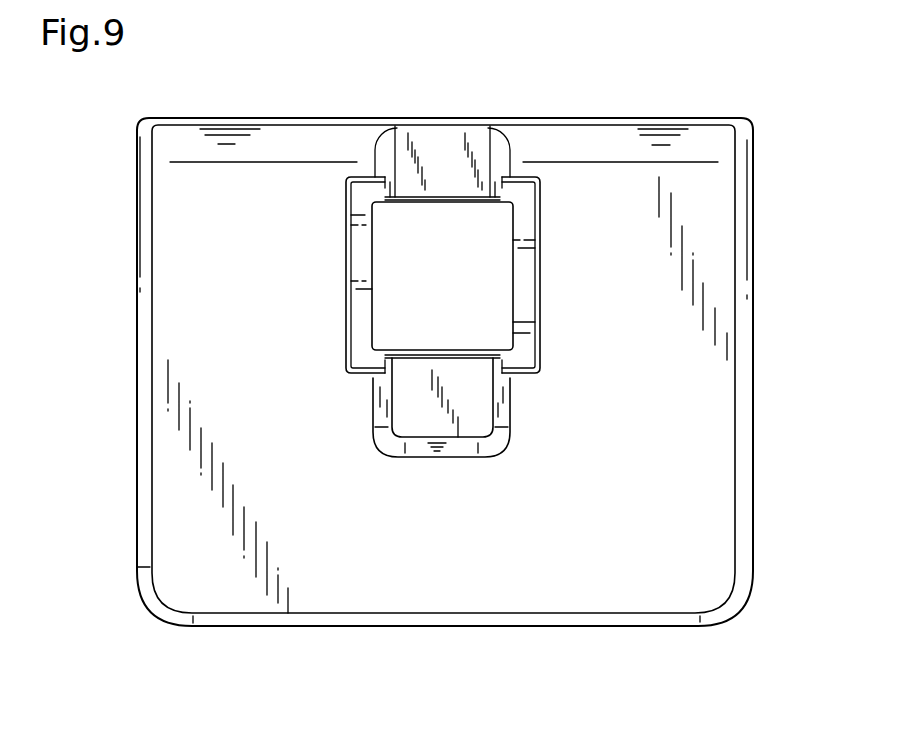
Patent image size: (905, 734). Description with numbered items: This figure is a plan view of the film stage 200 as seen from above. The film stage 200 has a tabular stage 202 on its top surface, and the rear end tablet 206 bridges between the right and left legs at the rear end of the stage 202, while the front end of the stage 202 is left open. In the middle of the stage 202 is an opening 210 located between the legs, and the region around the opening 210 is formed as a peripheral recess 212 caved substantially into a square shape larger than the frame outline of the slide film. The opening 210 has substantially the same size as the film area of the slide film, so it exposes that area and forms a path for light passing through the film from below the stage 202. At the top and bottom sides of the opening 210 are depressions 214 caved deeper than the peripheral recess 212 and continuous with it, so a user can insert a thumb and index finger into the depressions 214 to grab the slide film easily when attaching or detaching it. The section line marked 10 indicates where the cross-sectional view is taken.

The film stage 200 is at (688, 73).
The stage 202 is at (693, 603).
The rear end tablet 206 is at (478, 118).
The opening 210 is at (472, 277).
The peripheral recess 212 is at (358, 306).
The depressions 214 is at (483, 149).
The section line of FIG. 10 is at (445, 118).